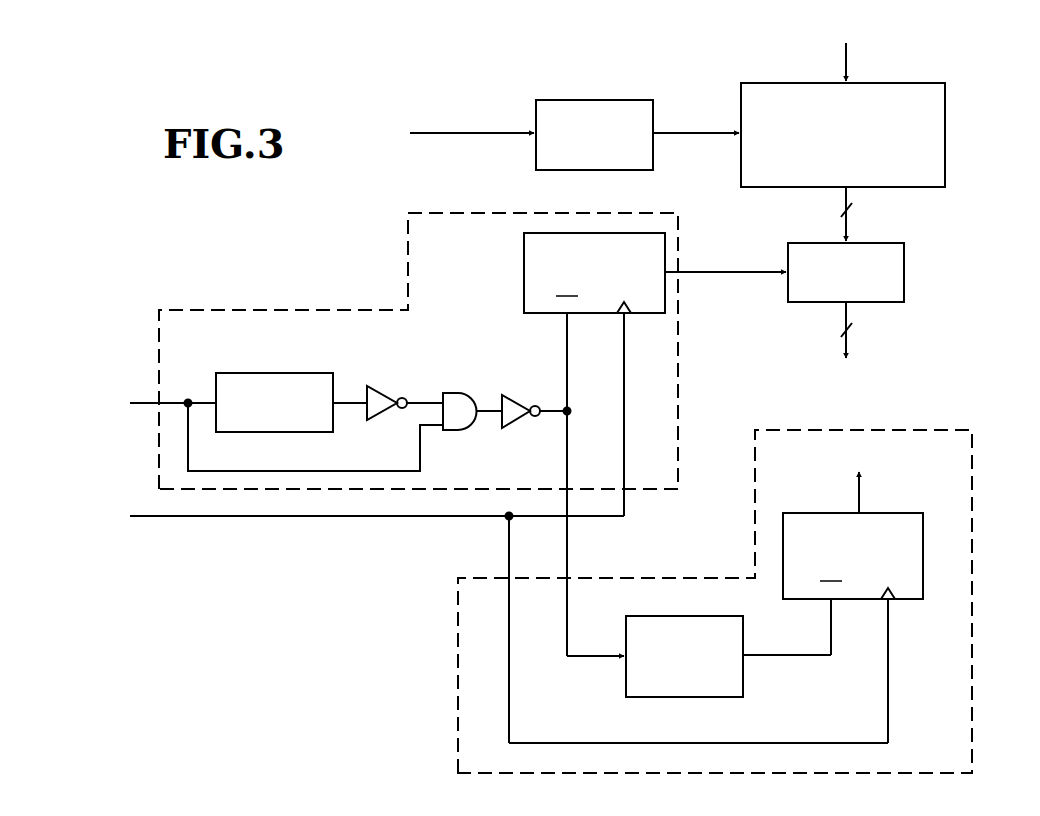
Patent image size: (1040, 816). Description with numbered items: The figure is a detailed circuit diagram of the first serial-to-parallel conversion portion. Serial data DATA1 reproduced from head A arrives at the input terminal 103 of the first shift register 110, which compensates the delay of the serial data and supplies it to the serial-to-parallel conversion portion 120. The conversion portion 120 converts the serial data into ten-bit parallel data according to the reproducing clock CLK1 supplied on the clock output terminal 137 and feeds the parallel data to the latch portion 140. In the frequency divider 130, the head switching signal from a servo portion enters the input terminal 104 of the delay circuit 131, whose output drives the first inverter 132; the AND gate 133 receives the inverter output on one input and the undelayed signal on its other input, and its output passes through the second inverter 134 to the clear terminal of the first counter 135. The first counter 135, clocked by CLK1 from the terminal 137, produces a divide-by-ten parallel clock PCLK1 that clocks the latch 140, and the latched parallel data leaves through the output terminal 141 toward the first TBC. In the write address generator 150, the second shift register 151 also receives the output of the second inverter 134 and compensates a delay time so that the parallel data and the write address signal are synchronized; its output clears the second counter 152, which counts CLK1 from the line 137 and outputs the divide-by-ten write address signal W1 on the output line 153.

The input terminal 103 is at (450, 133).
The input terminal 104 is at (150, 400).
The first shift register 110 is at (572, 100).
The serial-to-parallel conversion portion 120 is at (946, 134).
The frequency divider 130 is at (194, 326).
The delay circuit 131 is at (254, 373).
The first inverter 132 is at (381, 386).
The AND gate 133 is at (466, 393).
The second inverter 134 is at (520, 422).
The first counter 135 is at (523, 264).
The output terminal of clock generator 137 is at (848, 58).
The latch portion 140 is at (906, 276).
The output terminal 141 is at (849, 333).
The write address generator 150 is at (745, 601).
The second shift register 151 is at (700, 698).
The second counter 152 is at (905, 599).
The output line W1 153 is at (862, 497).